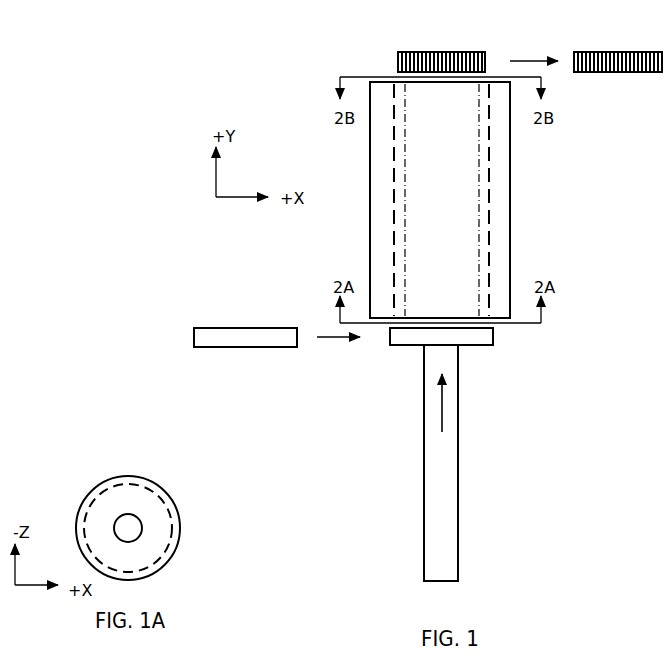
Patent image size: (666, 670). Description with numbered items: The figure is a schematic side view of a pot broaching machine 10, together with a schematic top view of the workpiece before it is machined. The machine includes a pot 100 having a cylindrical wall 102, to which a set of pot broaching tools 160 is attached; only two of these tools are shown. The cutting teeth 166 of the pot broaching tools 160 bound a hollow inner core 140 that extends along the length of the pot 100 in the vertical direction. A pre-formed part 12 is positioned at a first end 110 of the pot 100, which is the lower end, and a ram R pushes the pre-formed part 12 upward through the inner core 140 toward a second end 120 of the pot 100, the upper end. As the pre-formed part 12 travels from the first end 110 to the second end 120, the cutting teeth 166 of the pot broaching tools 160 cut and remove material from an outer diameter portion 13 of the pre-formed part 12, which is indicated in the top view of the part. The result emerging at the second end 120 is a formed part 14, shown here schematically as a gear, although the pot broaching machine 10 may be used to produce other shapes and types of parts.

In FIG. 1, the pot broaching machine 10 is at (116, 91).
In FIG. 1, the pre-formed part 12 is at (271, 347).
In FIG. 1A, the pre-formed part 12 is at (178, 505).
In FIG. 1A, the outer diameter portion 13 is at (138, 480).
In FIG. 1, the formed part 14 is at (422, 52).
In FIG. 1, the pot 100 is at (514, 209).
In FIG. 1, the cylindrical wall 102 is at (505, 168).
In FIG. 1, the first end 110 is at (500, 324).
In FIG. 1, the second end 120 is at (498, 79).
In FIG. 1, the hollow inner core 140 is at (458, 293).
In FIG. 1, the pot broaching tools 160 is at (405, 169).
In FIG. 1, the cutting teeth 166 is at (406, 122).
In FIG. 1, the ram R is at (458, 462).